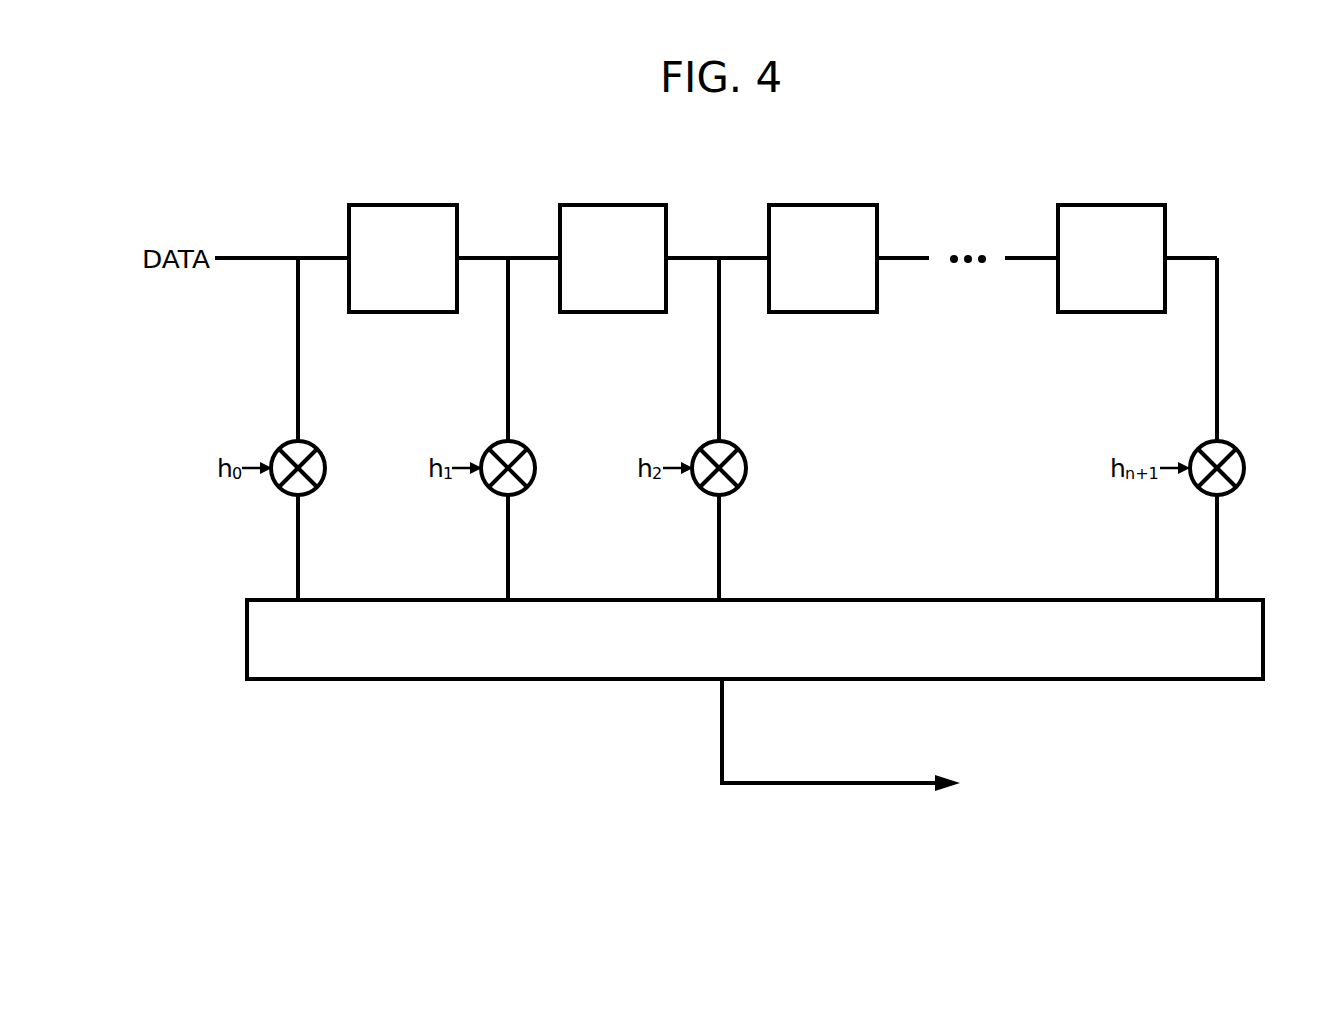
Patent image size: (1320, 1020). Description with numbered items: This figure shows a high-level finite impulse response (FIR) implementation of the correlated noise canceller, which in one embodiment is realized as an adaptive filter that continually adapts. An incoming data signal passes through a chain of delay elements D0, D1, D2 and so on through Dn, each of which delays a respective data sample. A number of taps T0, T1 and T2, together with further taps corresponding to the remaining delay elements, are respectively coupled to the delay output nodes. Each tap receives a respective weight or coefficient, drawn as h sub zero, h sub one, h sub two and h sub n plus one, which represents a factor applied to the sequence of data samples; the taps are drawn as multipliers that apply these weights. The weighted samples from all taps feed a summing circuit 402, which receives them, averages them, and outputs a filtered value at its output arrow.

The summing circuit 402 is at (775, 662).
The delay element D0 is at (403, 258).
The delay element D1 is at (613, 258).
The delay element D2 is at (823, 258).
The delay element Dn is at (1111, 258).
The tap T0 is at (310, 444).
The tap T1 is at (520, 444).
The tap T2 is at (731, 444).